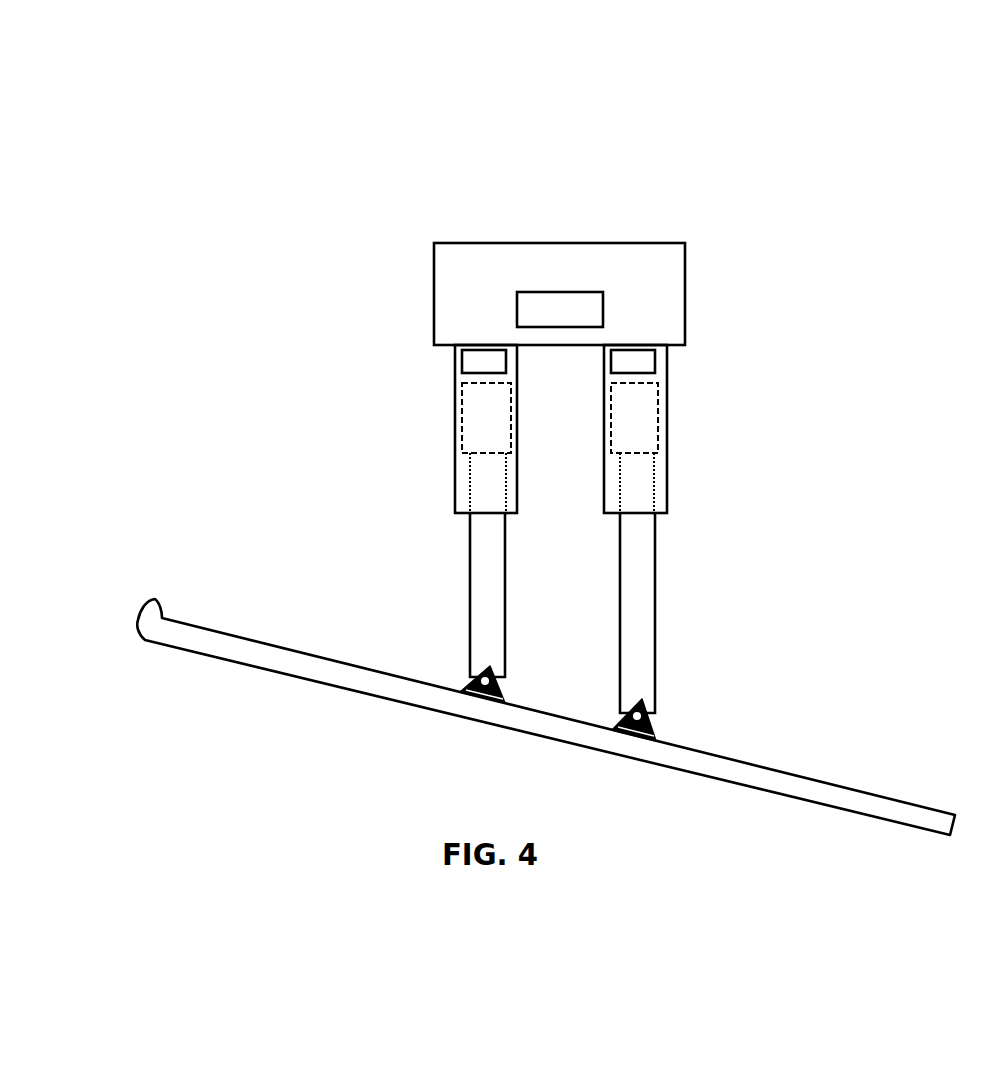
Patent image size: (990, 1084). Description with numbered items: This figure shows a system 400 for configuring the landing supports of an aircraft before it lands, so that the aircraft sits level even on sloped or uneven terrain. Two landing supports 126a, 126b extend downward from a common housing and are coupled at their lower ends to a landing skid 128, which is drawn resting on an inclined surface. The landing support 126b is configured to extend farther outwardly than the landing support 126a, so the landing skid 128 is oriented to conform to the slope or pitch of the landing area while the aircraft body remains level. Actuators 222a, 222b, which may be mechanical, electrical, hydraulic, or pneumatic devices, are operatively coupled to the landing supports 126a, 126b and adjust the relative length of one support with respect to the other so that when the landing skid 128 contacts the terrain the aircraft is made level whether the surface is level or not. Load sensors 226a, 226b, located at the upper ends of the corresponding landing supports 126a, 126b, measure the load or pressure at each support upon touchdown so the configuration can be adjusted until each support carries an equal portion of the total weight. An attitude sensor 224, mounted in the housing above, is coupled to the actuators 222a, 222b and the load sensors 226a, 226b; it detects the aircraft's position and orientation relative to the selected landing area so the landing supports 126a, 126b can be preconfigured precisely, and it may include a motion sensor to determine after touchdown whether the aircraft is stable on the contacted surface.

The system 400 is at (718, 108).
The attitude sensor 224 is at (557, 326).
The load sensor 226a is at (455, 355).
The load sensor 226b is at (660, 355).
The actuator 222a is at (456, 405).
The actuator 222b is at (658, 402).
The landing support 126a is at (470, 568).
The landing support 126b is at (655, 572).
The landing skid 128 is at (758, 768).